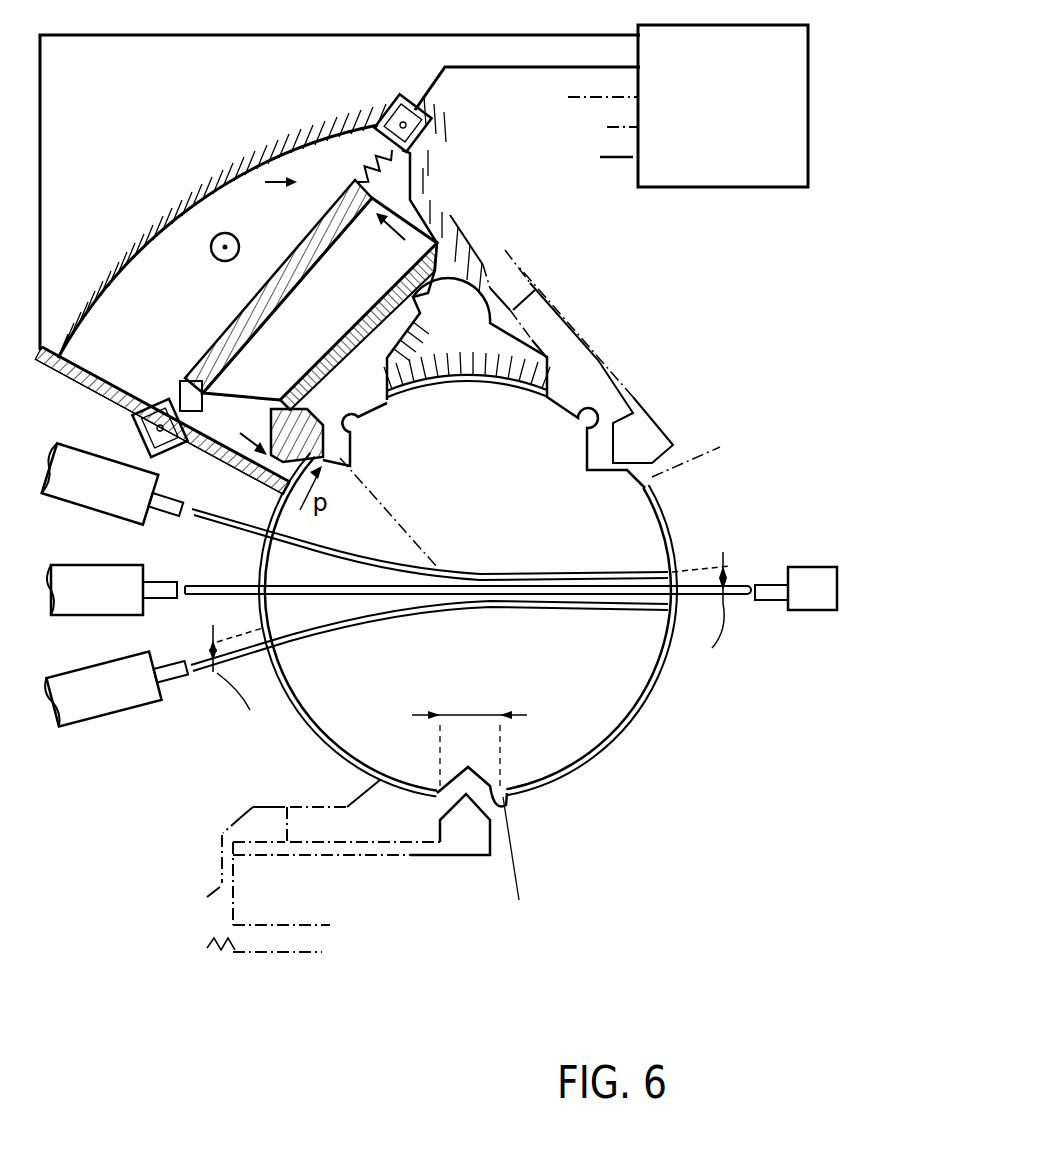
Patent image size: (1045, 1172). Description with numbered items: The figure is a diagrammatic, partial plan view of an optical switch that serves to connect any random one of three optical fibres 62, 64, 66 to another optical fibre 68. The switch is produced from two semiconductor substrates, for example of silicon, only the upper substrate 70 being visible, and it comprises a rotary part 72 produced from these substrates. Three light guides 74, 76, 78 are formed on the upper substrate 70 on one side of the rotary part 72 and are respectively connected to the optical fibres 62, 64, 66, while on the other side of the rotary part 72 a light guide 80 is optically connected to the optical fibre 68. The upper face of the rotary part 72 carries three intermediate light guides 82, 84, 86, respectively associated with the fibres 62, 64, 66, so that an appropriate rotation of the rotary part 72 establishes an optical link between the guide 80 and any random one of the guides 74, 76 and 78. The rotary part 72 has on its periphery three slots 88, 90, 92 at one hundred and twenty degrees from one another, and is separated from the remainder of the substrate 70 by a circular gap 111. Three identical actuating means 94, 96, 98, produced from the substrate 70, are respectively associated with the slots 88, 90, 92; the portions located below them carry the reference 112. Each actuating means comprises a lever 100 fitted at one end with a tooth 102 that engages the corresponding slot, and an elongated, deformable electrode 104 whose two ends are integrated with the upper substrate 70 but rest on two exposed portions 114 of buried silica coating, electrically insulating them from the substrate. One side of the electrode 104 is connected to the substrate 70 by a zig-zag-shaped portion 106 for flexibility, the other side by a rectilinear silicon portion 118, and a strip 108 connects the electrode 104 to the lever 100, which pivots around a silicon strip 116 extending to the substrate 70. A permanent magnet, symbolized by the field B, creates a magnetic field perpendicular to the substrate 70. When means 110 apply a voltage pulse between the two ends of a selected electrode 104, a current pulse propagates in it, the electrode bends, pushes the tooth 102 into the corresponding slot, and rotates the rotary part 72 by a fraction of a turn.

The optical fibre 62 is at (93, 490).
The optical fibre 64 is at (90, 590).
The optical fibre 66 is at (83, 707).
The optical fibre 68 is at (820, 575).
The upper substrate 70 is at (775, 280).
The rotary part 72 is at (617, 523).
The light guide 74 is at (243, 517).
The light guide 76 is at (247, 593).
The light guide 78 is at (200, 660).
The light guide 80 is at (745, 597).
The intermediate light guide 82 is at (467, 573).
The intermediate light guide 84 is at (338, 587).
The intermediate light guide 86 is at (550, 603).
The slot 88 is at (360, 415).
The slot 90 is at (577, 422).
The slot 92 is at (500, 797).
The actuating means 94 is at (100, 258).
The actuating means 96 is at (660, 383).
The actuating means 98 is at (273, 962).
The lever 100 is at (362, 325).
The tooth 102 is at (293, 433).
The elongated deformable electrode 104 is at (252, 282).
The zig-zag-shaped portion 106 is at (362, 175).
The strip 108 is at (407, 223).
The voltage pulse applying means 110 is at (705, 115).
The circular gap 111 is at (610, 740).
The portions 112 is at (230, 207).
The silica coating portions 114 is at (440, 127).
The silicon strip 116 is at (463, 226).
The rectilinear silicon portion 118 is at (173, 390).